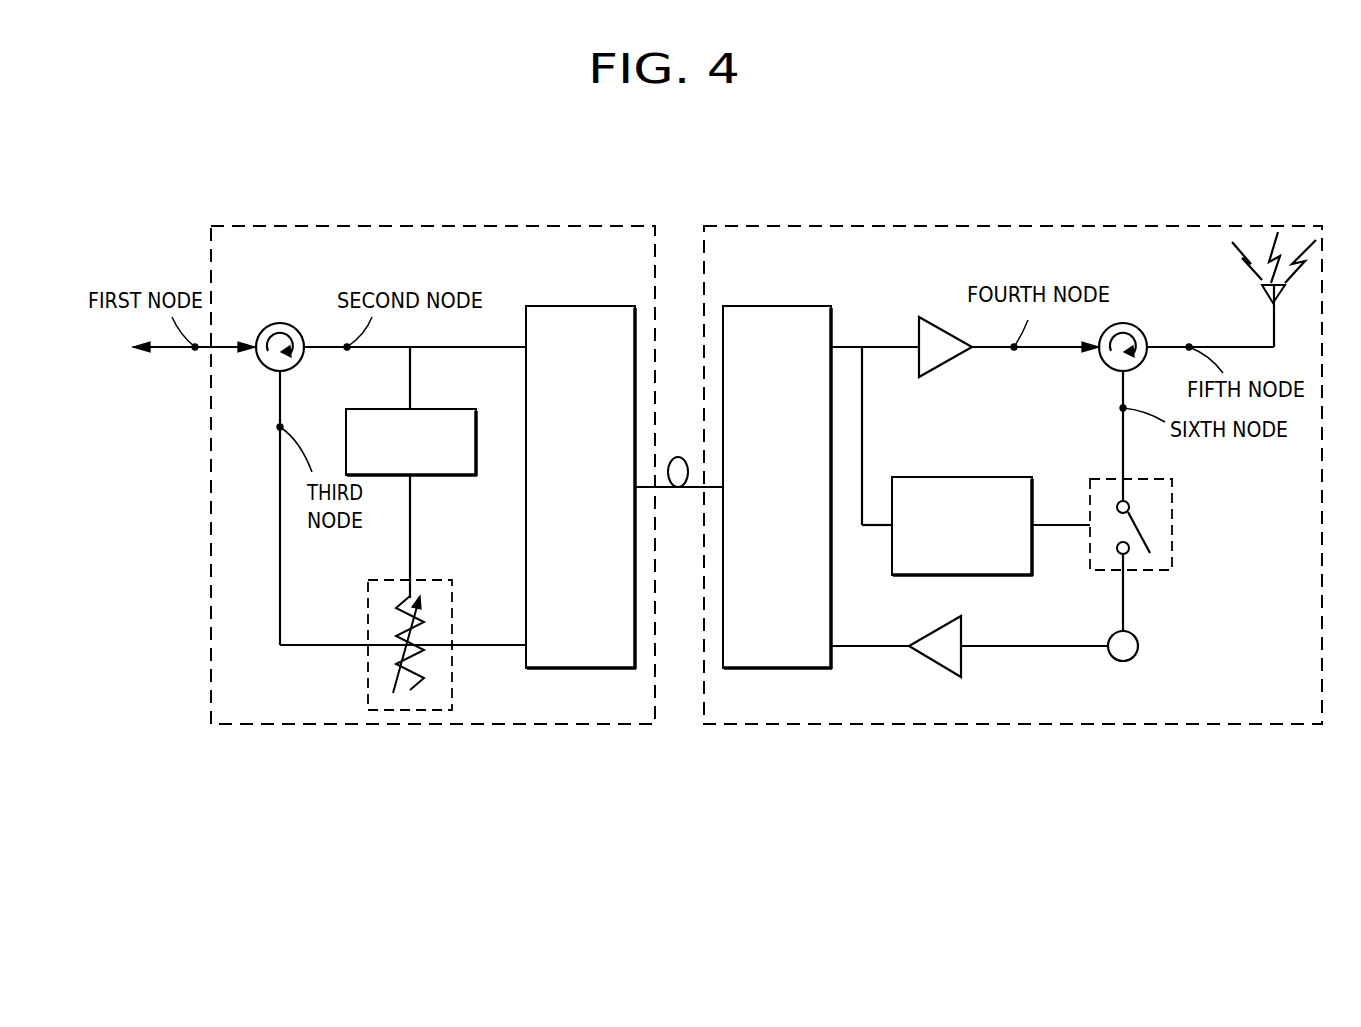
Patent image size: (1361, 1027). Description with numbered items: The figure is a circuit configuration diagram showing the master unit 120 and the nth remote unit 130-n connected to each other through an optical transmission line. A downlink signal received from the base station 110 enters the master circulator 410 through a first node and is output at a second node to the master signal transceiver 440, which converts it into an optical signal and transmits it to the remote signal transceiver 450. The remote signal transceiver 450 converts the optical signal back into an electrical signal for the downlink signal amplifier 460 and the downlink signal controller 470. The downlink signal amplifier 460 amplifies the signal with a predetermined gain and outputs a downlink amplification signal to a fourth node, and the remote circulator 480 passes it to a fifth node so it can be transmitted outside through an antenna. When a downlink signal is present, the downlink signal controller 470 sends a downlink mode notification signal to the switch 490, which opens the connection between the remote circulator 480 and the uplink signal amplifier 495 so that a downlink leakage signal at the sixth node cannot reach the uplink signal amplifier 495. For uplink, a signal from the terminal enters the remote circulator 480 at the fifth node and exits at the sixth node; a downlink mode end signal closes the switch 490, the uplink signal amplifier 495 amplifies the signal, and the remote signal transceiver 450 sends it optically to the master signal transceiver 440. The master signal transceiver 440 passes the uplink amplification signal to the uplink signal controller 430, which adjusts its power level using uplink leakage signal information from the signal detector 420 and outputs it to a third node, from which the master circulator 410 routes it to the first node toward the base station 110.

The base station 110 is at (161, 346).
The master unit 120 is at (571, 724).
The nth remote unit 130-n is at (987, 724).
The master circulator 410 is at (290, 323).
The signal detector 420 is at (443, 409).
The uplink signal controller 430 is at (438, 580).
The master signal transceiver 440 is at (597, 306).
The remote signal transceiver 450 is at (790, 306).
The downlink signal amplifier 460 is at (947, 330).
The downlink signal controller 470 is at (962, 477).
The remote circulator 480 is at (1137, 328).
The switch 490 is at (1173, 502).
The uplink signal amplifier 495 is at (930, 662).